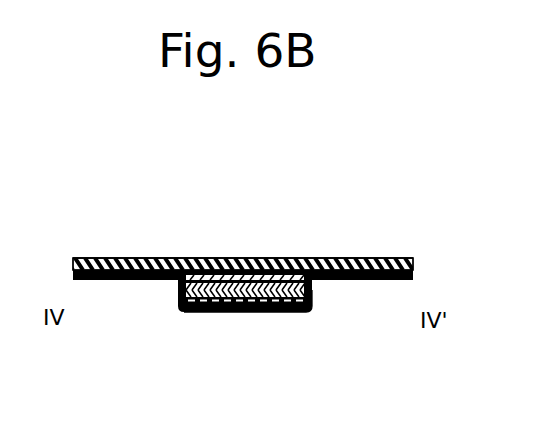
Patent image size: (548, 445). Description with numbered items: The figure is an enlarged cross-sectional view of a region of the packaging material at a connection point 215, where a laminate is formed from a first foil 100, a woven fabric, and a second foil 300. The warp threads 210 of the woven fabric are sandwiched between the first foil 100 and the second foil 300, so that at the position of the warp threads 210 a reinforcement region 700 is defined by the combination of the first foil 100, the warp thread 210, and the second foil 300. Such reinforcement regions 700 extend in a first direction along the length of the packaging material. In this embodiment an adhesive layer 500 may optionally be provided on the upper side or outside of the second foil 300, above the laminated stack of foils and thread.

The first foil 100 is at (298, 312).
The warp thread 210 is at (262, 312).
The connection point 215 is at (268, 249).
The second foil 300 is at (92, 262).
The adhesive layer 500 is at (177, 265).
The reinforcement region 700 is at (263, 218).